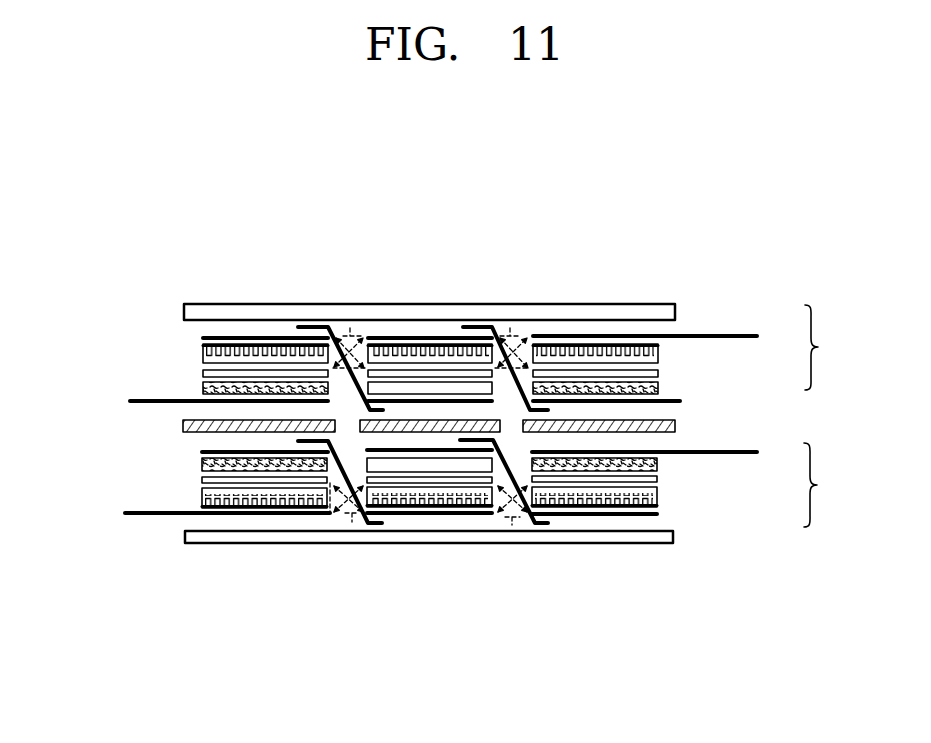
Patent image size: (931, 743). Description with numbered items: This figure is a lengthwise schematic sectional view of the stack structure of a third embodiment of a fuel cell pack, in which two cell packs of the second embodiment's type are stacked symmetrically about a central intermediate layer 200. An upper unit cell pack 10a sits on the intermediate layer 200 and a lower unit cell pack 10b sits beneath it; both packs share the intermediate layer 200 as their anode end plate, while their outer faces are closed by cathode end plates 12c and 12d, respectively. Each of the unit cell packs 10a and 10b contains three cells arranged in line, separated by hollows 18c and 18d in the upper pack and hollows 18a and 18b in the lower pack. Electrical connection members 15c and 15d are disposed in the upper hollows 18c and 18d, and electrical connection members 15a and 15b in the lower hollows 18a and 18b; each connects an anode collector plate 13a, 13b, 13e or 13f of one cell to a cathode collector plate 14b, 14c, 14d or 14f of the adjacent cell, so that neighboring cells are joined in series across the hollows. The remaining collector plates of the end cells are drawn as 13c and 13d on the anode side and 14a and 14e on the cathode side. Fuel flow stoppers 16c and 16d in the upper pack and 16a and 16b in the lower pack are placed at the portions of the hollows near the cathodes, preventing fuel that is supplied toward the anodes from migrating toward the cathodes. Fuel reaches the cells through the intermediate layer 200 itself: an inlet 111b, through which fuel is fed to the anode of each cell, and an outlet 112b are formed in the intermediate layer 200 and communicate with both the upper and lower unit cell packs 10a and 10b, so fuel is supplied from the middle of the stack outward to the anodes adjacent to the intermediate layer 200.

The unit cell pack 10a is at (837, 347).
The unit cell pack 10b is at (836, 485).
The cathode end plate 12c is at (665, 305).
The cathode end plate 12d is at (673, 538).
The anode collector plate 13a is at (202, 452).
The anode collector plate 13b is at (430, 453).
The electrode 13c is at (737, 456).
The electrode 13d is at (130, 400).
The anode collector plate 13e is at (463, 405).
The anode collector plate 13f is at (660, 403).
The electrode 14a is at (143, 514).
The cathode collector plate 14b is at (473, 515).
The cathode collector plate 14c is at (657, 514).
The cathode collector plate 14d is at (203, 338).
The electrode 14e is at (455, 327).
The cathode collector plate 14f is at (737, 336).
The electrical connection member 15a is at (352, 466).
The electrical connection member 15b is at (527, 516).
The electrical connection member 15c is at (319, 345).
The electrical connection member 15d is at (482, 345).
The fuel flow stopper 16a is at (347, 520).
The fuel flow stopper 16b is at (510, 523).
The fuel flow stopper 16c is at (350, 328).
The fuel flow stopper 16d is at (510, 328).
The hollow 18a is at (380, 520).
The hollow 18b is at (522, 466).
The hollow 18c is at (376, 345).
The hollow 18d is at (538, 350).
The inlet 111b is at (330, 448).
The outlet 112b is at (508, 422).
The intermediate layer 200 is at (675, 427).